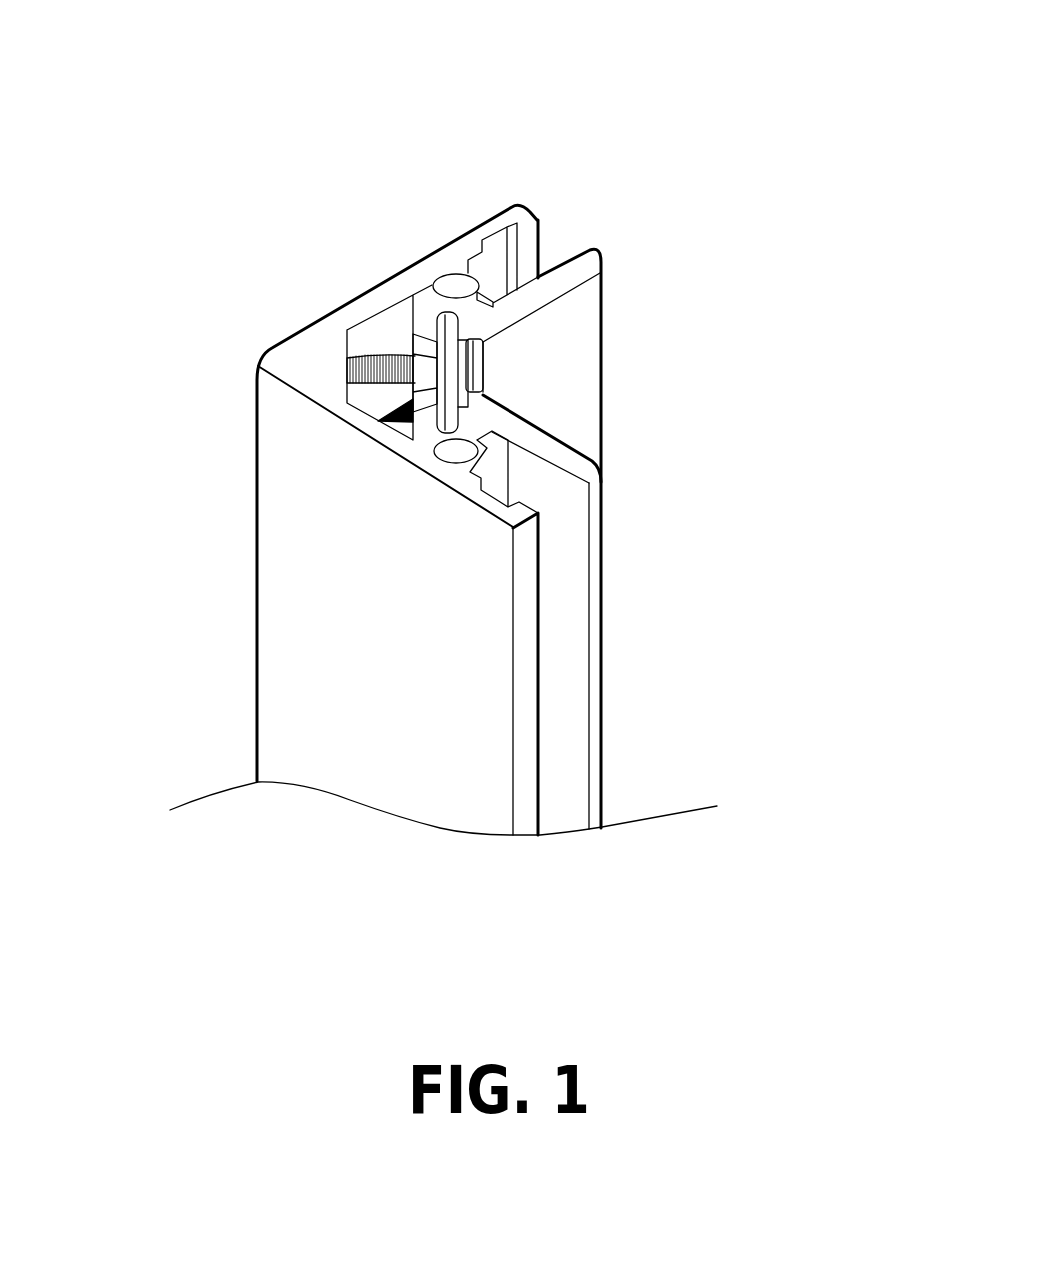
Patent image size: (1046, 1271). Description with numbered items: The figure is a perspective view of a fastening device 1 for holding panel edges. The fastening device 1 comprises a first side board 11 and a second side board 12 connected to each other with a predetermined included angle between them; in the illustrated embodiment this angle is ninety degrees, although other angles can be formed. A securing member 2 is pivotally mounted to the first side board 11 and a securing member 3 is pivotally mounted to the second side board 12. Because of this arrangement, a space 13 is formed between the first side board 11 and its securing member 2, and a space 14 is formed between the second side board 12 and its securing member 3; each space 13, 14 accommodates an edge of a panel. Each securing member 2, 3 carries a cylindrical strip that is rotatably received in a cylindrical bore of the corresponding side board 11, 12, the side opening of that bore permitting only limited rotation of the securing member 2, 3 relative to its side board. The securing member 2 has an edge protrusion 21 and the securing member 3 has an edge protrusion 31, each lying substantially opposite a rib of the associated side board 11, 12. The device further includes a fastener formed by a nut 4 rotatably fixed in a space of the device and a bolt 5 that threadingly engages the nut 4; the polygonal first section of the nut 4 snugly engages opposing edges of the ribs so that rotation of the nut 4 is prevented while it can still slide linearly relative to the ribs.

The fastening device 1 is at (340, 250).
The securing member 2 is at (574, 463).
The securing member 3 is at (570, 277).
The nut 4 is at (347, 360).
The bolt 5 is at (470, 367).
The first side board 11 is at (485, 578).
The second side board 12 is at (476, 247).
The space 13 is at (573, 694).
The space 14 is at (553, 247).
The edge protrusion 21 is at (463, 405).
The edge protrusion 31 is at (467, 327).